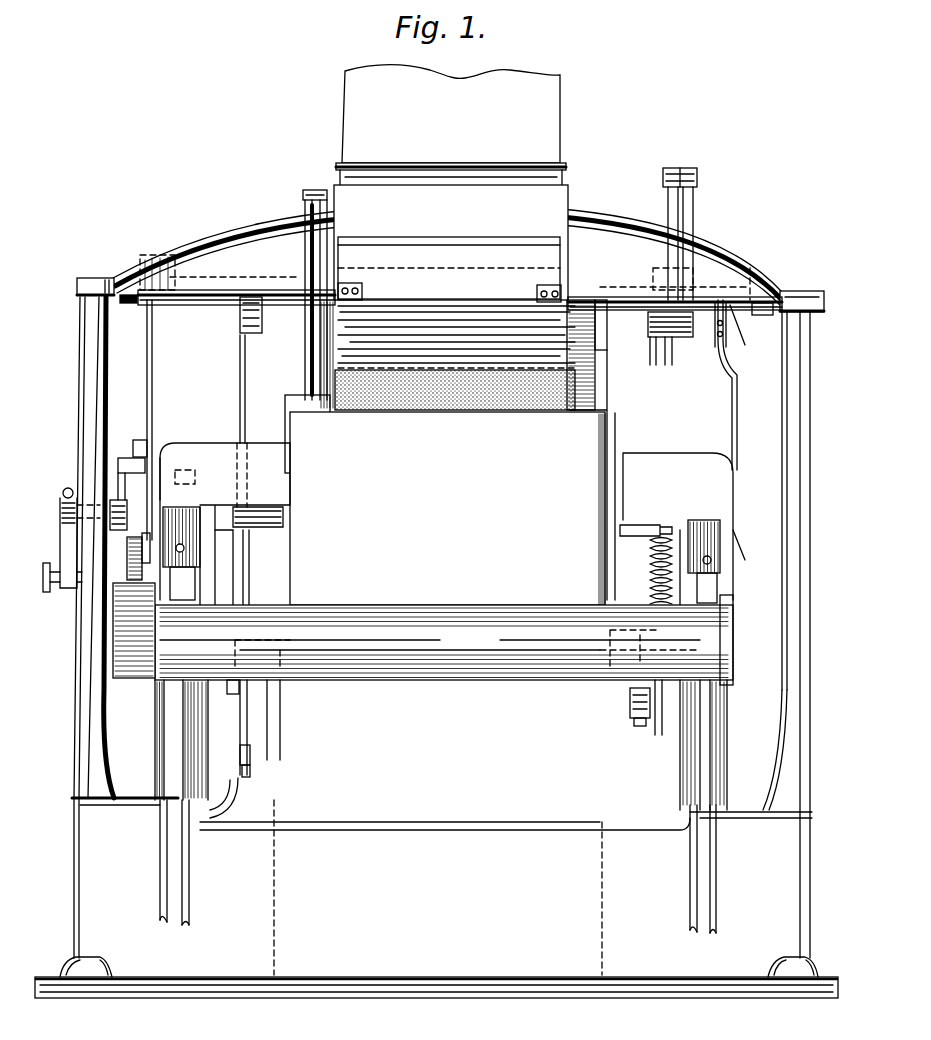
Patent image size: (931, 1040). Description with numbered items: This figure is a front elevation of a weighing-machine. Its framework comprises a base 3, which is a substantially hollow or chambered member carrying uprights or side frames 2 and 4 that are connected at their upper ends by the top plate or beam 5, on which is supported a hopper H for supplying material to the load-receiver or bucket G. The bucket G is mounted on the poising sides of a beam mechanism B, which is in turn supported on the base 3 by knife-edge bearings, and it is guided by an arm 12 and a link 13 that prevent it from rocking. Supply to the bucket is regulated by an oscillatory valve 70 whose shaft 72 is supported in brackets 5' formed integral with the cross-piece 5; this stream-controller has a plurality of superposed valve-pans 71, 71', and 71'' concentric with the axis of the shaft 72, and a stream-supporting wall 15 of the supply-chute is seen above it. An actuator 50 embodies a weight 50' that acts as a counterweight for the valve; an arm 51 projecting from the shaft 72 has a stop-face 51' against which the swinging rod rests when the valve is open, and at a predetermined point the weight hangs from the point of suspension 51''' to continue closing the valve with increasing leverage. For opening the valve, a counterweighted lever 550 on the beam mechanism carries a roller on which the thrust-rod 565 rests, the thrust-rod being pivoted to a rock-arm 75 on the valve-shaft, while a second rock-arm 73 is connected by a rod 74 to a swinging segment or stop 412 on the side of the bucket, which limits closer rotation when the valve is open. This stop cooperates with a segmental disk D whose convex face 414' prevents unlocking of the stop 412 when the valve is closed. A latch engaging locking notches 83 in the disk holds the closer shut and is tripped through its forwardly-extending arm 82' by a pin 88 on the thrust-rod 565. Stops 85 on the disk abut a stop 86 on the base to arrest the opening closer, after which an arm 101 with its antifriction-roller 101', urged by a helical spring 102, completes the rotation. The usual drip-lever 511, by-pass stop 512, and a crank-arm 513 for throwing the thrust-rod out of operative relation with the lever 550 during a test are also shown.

The upright or side frame 2 is at (88, 430).
The base 3 is at (436, 898).
The upright or side frame 4 is at (803, 492).
The top plate or beam 5 is at (447, 256).
The bracket 5' is at (447, 319).
The arm 12 is at (305, 250).
The link 13 is at (325, 190).
The stream-supporting wall 15 is at (425, 320).
The actuator 50 is at (657, 243).
The weight 50' is at (650, 309).
The arm 51 is at (692, 243).
The stop-face 51' is at (660, 299).
The point of suspension 51''' is at (709, 170).
The valve 70 is at (598, 340).
The stream-controlling member or valve-pan 71 is at (617, 306).
The stream-controlling member or valve-pan 71' is at (646, 328).
The stream-controlling member or valve-pan 71'' is at (579, 397).
The valve-shaft 72 is at (212, 305).
The rock-arm 73 is at (255, 323).
The rod 74 is at (466, 256).
The rock-arm 75 is at (175, 276).
The latch arm 82' is at (225, 524).
The locking notch 83 is at (250, 757).
The stop 85 is at (226, 690).
The stop 86 is at (240, 790).
The pin 88 is at (182, 470).
The arm 101 is at (598, 709).
The antifriction-roller 101' is at (640, 742).
The spring 102 is at (652, 553).
The swinging segment or stop 412 is at (248, 582).
The convex face 414' is at (289, 773).
The drip-lever 511 is at (732, 405).
The by-pass stop 512 is at (733, 547).
The crank-arm 513 is at (62, 588).
The counterweighted lever 550 is at (128, 562).
The thrust-rod 565 is at (151, 388).
The beam mechanism B is at (423, 634).
The segmental disk D is at (441, 745).
The load-receiver or bucket G is at (447, 508).
The hopper H is at (451, 243).